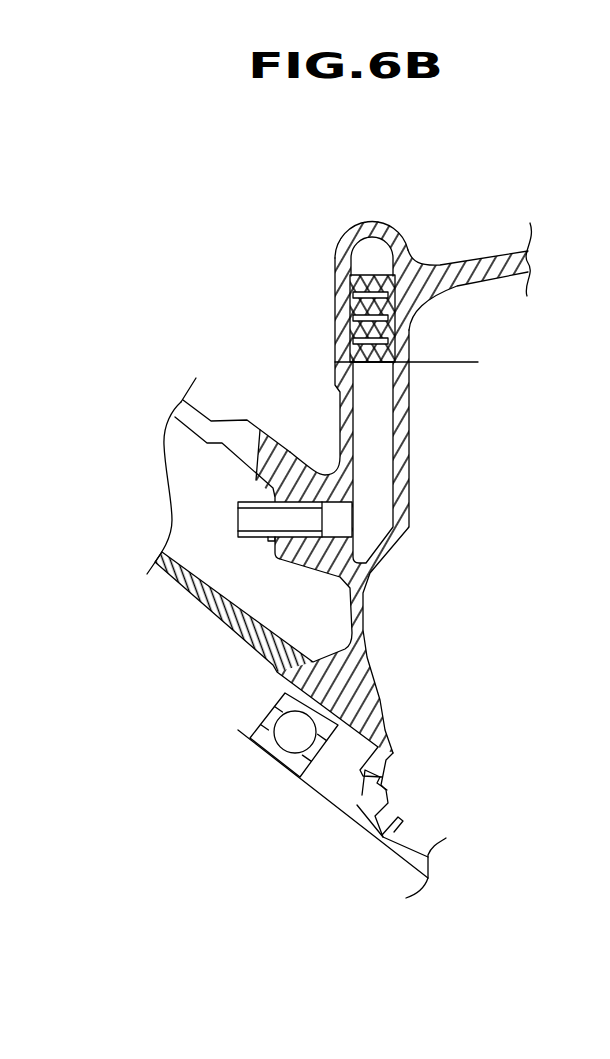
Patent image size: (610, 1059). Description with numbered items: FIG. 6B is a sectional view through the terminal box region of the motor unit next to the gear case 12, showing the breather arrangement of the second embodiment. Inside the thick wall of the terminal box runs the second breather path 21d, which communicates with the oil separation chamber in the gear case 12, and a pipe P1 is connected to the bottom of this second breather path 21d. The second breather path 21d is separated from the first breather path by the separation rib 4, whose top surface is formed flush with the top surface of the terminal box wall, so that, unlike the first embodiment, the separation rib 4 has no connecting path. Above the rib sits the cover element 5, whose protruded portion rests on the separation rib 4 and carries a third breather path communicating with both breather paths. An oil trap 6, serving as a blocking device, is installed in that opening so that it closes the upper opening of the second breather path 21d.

The cover element 5 is at (375, 217).
The oil trap 6 is at (366, 266).
The gear case 12 is at (208, 414).
The separation rib 4 is at (375, 420).
The second breather path 21d is at (375, 477).
The pipe P1 is at (247, 518).